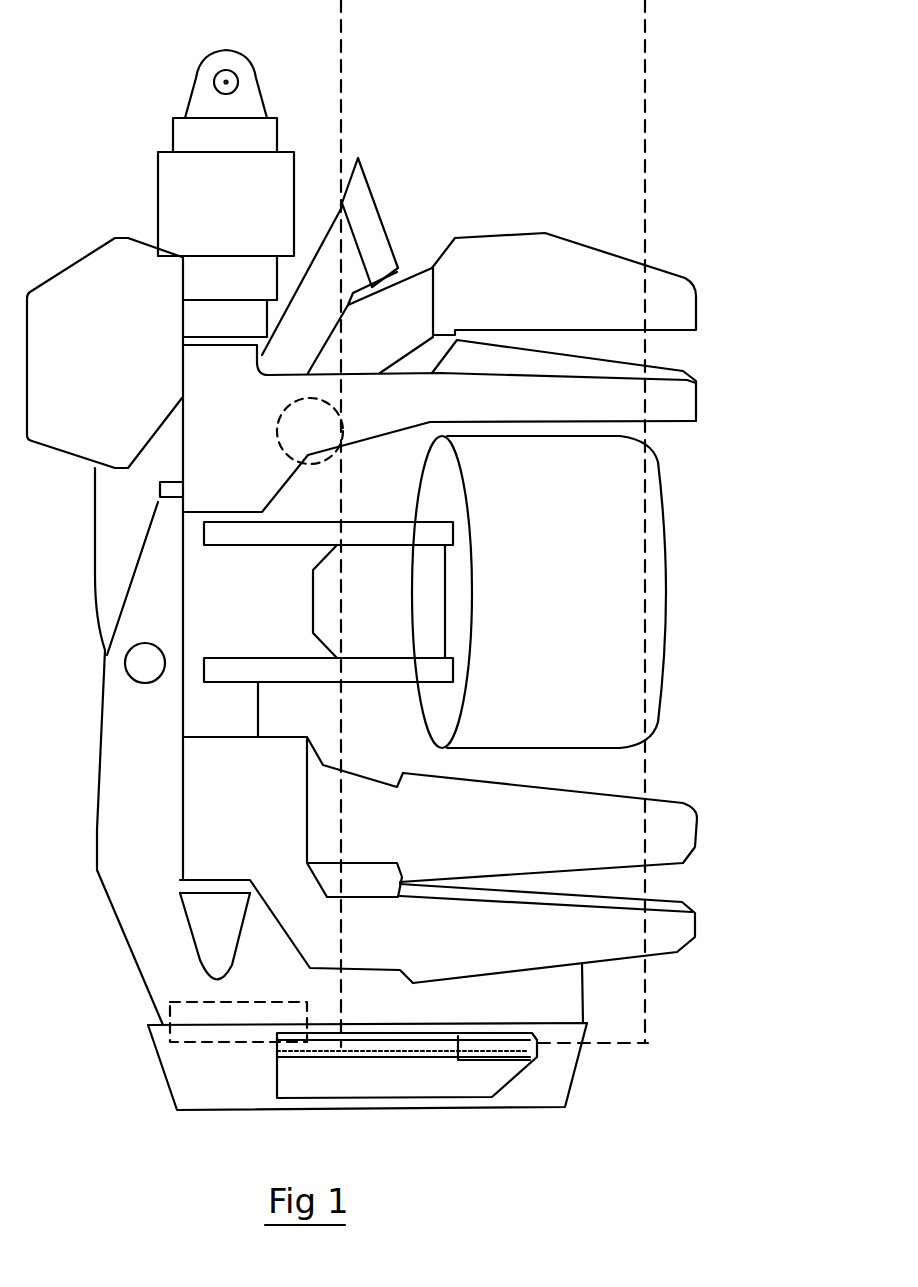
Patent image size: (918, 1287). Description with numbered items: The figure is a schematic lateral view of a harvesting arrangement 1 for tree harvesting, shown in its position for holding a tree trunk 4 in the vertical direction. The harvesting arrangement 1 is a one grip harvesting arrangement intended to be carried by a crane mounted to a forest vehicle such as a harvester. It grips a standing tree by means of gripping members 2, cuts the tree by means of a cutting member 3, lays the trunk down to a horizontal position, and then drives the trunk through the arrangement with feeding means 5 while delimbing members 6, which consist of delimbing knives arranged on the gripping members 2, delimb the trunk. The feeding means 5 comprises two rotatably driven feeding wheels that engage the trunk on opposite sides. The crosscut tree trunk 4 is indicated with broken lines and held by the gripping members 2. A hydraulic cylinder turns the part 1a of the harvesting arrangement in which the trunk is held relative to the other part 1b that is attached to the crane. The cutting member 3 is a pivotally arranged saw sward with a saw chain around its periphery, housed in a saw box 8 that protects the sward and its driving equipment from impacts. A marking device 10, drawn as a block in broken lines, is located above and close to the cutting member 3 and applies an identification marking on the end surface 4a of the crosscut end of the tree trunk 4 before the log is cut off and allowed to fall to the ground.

The harvesting arrangement 1 is at (118, 176).
The part of the harvesting arrangement in which the trunk is held 1a is at (110, 806).
The other part of the harvesting arrangement 1b is at (280, 165).
The gripping members 2 is at (670, 258).
The cutting member 3 is at (375, 1052).
The tree trunk 4 is at (640, 992).
The end surface 4a is at (615, 1045).
The feeding means 5 is at (672, 531).
The delimbing members 6 is at (364, 218).
The saw box 8 is at (168, 1060).
The marking device 10 is at (165, 1003).